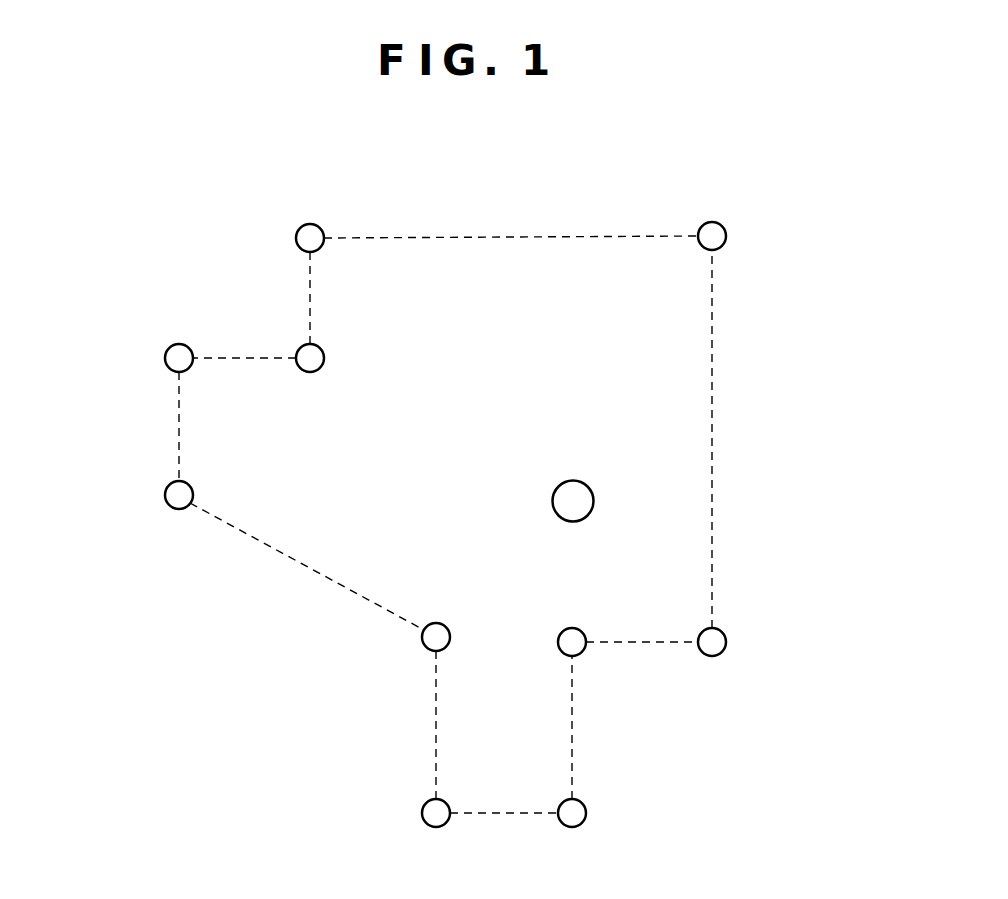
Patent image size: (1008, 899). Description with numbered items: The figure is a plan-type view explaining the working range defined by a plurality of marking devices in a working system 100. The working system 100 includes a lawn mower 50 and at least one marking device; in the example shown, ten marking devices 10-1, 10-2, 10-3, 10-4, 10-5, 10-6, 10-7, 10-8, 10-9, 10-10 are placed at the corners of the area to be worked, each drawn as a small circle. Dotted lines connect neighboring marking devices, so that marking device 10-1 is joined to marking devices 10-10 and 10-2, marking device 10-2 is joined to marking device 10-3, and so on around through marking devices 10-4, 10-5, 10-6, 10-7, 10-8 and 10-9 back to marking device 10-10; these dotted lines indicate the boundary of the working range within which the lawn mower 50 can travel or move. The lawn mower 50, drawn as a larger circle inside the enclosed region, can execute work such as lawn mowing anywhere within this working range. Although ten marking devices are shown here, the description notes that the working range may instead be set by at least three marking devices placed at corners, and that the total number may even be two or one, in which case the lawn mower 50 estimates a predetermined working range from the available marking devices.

The working system 100 is at (778, 172).
The marking device 10-1 is at (727, 236).
The marking device 10-2 is at (727, 642).
The marking device 10-3 is at (580, 655).
The marking device 10-4 is at (578, 828).
The marking device 10-5 is at (437, 828).
The marking device 10-6 is at (426, 648).
The marking device 10-7 is at (176, 510).
The marking device 10-8 is at (164, 355).
The marking device 10-9 is at (306, 345).
The marking device 10-10 is at (307, 224).
The lawn mower 50 is at (571, 480).